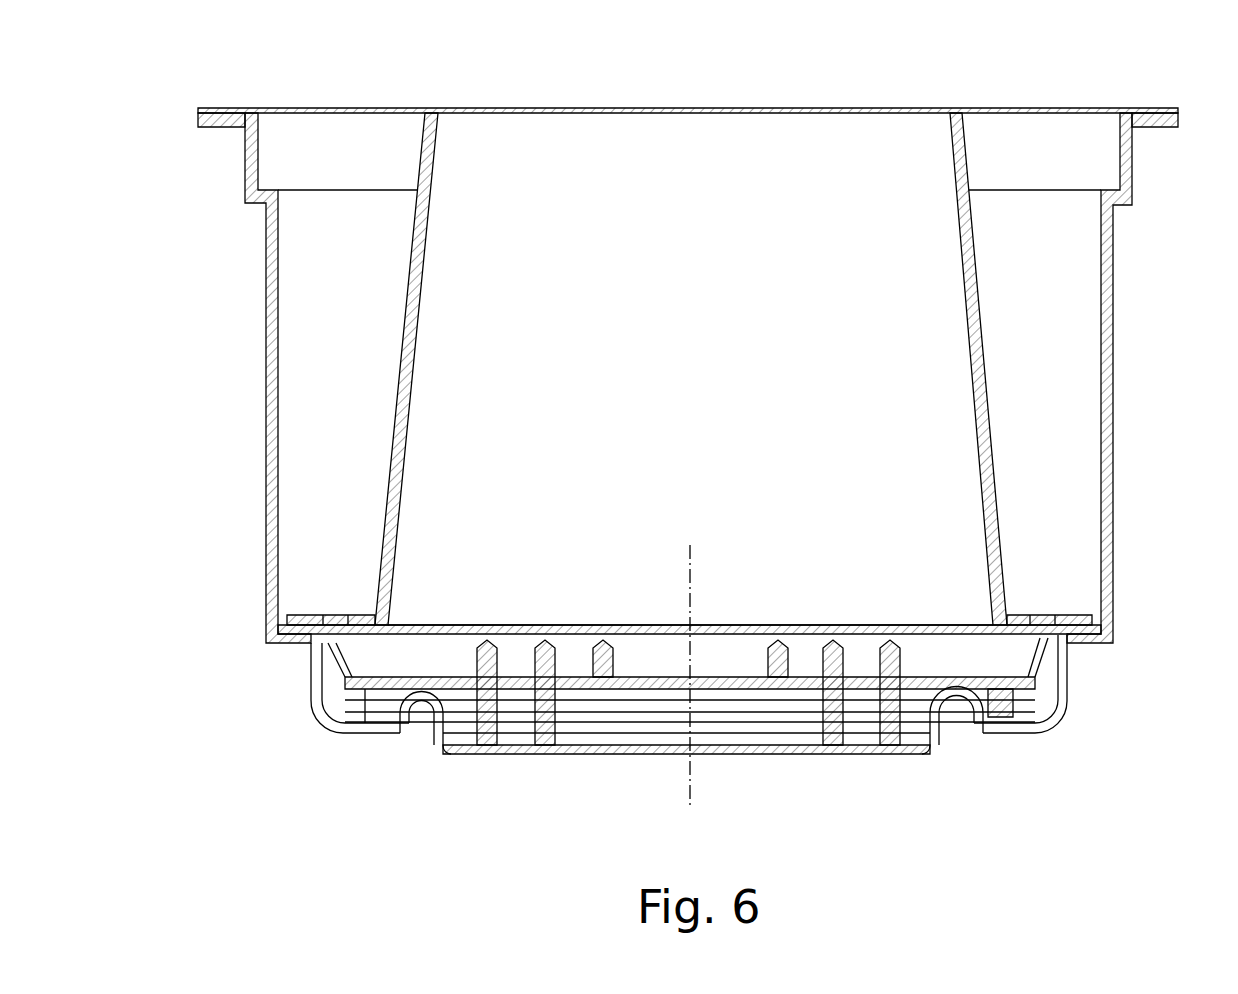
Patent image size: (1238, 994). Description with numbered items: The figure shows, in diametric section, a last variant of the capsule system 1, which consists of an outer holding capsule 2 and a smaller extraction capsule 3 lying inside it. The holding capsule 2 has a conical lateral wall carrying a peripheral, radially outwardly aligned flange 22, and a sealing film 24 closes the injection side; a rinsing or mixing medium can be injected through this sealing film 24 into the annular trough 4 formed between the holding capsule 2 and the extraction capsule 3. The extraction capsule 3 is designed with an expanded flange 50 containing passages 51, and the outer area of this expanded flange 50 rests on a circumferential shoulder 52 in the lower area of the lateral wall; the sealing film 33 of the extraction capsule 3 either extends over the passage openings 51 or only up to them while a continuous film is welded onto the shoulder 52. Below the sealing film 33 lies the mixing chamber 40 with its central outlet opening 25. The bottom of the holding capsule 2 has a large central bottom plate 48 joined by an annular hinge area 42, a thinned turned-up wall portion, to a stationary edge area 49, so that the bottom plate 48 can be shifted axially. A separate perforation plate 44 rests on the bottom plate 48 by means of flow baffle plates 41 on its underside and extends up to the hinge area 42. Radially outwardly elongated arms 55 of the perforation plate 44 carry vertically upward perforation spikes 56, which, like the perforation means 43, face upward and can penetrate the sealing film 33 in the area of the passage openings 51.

The capsule system 1 is at (148, 86).
The holding capsule 2 is at (1130, 385).
The extraction capsule 3 is at (985, 250).
The annular trough 4 is at (350, 373).
The flange 22 is at (1152, 106).
The sealing film 24 is at (1055, 105).
The central outlet opening 25 is at (685, 757).
The sealing film 33 is at (527, 625).
The mixing chamber 40 is at (705, 747).
The flow baffle plates 41 is at (833, 725).
The annular hinge area 42 is at (425, 724).
The perforation means 43 is at (690, 658).
The perforation plate 44 is at (585, 703).
The bottom plate 48 is at (518, 757).
The stationary edge area 49 is at (315, 722).
The expanded flange 50 is at (1077, 615).
The passages 51 is at (337, 615).
The circumferential shoulder 52 is at (1097, 645).
The elongated arms 55 is at (962, 742).
The perforation spikes 56 is at (1060, 673).